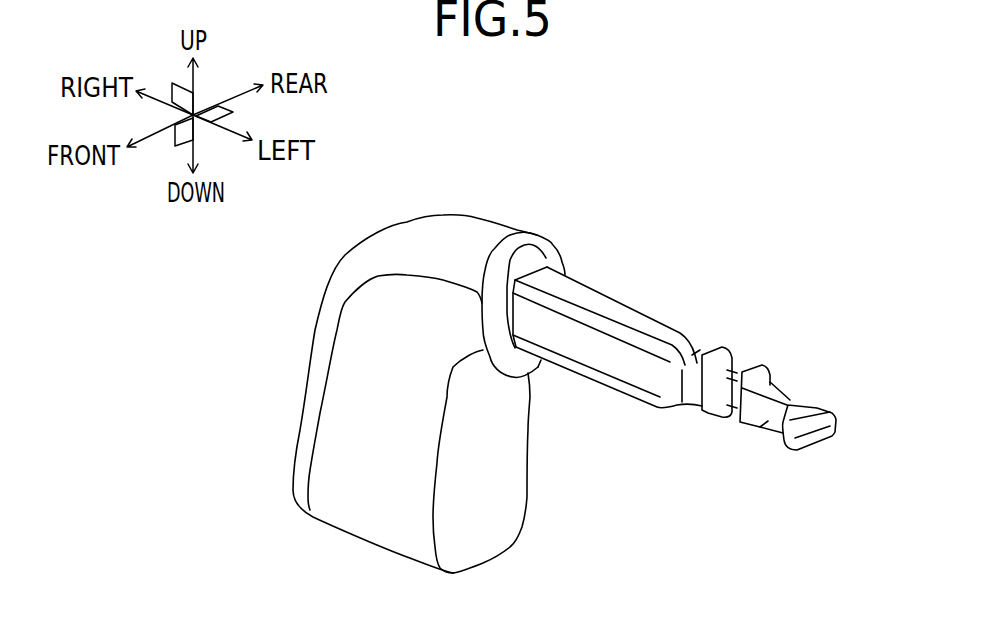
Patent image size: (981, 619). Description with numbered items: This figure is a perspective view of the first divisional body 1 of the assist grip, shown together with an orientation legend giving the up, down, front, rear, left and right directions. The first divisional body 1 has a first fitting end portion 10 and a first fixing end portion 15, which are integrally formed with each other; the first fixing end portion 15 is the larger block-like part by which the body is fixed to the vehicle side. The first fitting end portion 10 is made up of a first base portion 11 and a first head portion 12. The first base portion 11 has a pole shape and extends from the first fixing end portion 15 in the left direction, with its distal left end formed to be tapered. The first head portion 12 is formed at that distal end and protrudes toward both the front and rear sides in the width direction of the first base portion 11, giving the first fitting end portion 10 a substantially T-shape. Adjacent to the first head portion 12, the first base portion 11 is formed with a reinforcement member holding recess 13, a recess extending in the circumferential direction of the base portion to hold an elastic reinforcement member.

The first divisional body 1 is at (429, 371).
The first fitting end portion 10 is at (688, 365).
The first base portion 11 is at (667, 389).
The first head portion 12 is at (827, 407).
The reinforcement member holding recess 13 is at (732, 352).
The first fixing end portion 15 is at (362, 265).